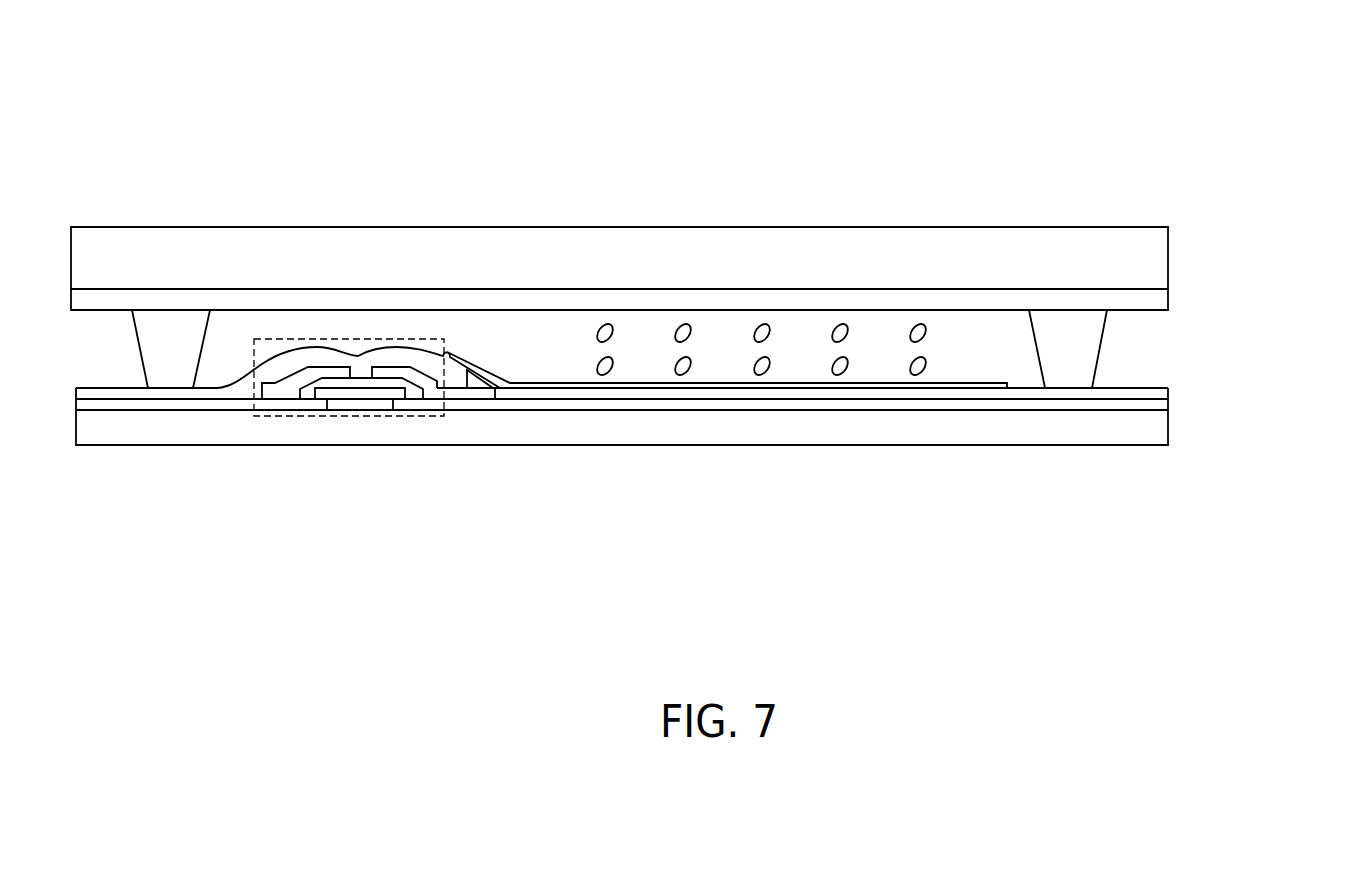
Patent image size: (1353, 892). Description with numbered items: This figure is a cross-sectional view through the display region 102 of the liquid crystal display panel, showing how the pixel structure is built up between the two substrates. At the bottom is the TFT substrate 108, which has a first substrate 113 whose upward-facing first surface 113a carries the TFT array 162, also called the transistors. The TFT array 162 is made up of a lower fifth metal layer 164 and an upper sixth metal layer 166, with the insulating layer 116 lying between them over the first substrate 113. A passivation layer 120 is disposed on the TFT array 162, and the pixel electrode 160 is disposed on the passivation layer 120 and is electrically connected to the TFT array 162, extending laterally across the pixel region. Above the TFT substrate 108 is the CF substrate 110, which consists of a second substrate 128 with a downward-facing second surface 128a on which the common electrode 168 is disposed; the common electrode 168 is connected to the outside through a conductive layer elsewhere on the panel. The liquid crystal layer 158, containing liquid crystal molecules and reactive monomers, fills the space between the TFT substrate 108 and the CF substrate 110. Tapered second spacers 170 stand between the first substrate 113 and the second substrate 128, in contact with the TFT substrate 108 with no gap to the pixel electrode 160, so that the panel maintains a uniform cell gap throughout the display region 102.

The display region 102 is at (1190, 130).
The TFT substrate 108 is at (1252, 390).
The CF substrate 110 is at (1252, 222).
The first substrate 113 is at (1157, 435).
The first surface 113a is at (1163, 409).
The insulating layer 116 is at (1163, 403).
The passivation layer 120 is at (1163, 393).
The second substrate 128 is at (1157, 244).
The second surface 128a is at (1157, 289).
The liquid crystal layer 158 is at (993, 363).
The pixel electrode 160 is at (977, 385).
The TFT array 162 is at (423, 415).
The fifth metal layer 164 is at (362, 406).
The sixth metal layer 166 is at (280, 392).
The common electrode 168 is at (1157, 298).
The second spacer 170 is at (160, 349).